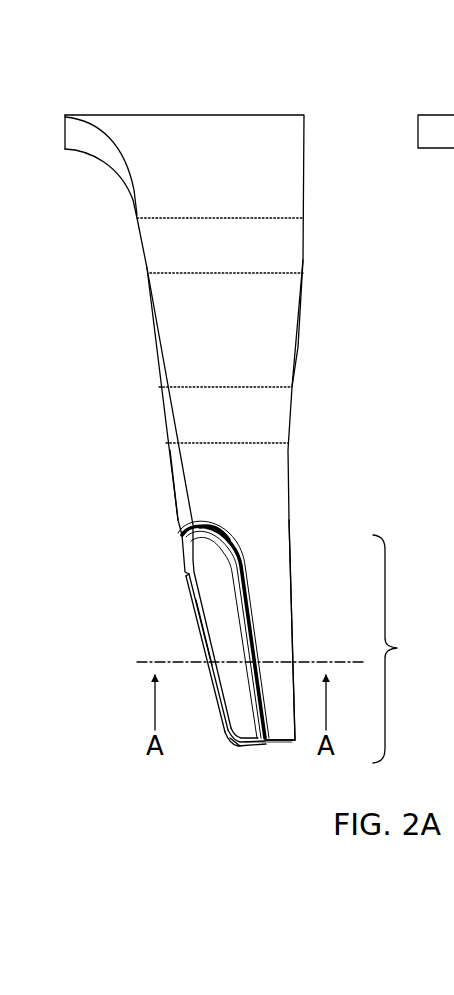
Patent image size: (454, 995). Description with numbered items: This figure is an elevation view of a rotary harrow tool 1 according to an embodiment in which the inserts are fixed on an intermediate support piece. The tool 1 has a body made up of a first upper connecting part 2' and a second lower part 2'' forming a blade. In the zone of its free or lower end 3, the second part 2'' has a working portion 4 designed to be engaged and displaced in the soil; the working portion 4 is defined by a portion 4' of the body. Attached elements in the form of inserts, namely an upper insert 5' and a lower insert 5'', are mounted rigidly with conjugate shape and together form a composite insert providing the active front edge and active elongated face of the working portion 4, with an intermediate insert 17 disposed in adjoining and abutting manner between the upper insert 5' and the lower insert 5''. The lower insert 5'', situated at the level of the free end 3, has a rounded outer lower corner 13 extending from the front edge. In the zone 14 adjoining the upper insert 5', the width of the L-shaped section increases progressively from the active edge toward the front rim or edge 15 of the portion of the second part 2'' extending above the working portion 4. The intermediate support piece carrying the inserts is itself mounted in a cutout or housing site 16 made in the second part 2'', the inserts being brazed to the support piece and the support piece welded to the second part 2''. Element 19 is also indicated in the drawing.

The rotary harrow tool 1 is at (128, 522).
The first upper connecting part 2' is at (318, 93).
The second lower part 2'' is at (339, 323).
The free or lower end 3 is at (262, 757).
The working portion 4 is at (398, 649).
The portion of body defining working portion 4' is at (315, 630).
The upper insert 5' is at (189, 630).
The lower insert 5'' is at (201, 759).
The rounded outer lower corner 13 is at (231, 749).
The zone adjoining upper insert 14 is at (179, 558).
The front rim or edge 15 is at (181, 488).
The housing site 16 is at (252, 597).
The intermediate insert 17 is at (206, 647).
The end of sealing strip 19 is at (227, 537).